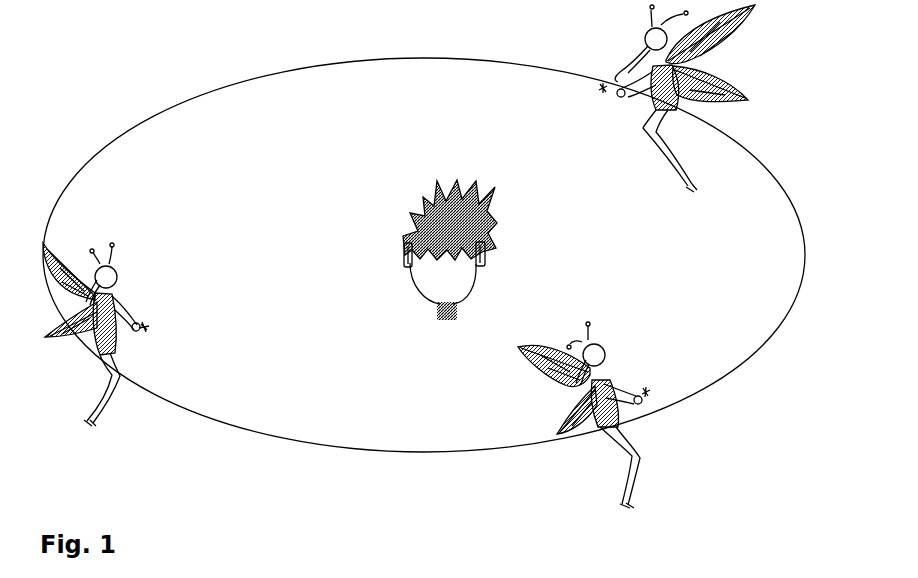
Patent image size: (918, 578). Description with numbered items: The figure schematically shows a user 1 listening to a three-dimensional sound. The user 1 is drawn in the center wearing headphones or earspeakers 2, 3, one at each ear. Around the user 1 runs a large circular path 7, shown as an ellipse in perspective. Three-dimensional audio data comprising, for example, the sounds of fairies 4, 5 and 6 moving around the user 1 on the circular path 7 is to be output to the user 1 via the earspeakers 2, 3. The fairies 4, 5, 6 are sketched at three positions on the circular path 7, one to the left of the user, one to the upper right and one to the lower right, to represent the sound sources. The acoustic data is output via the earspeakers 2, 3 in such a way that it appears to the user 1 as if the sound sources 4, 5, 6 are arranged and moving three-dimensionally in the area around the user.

The user 1 is at (436, 293).
The earspeaker 2 is at (404, 262).
The earspeaker 3 is at (486, 257).
The fairy 4 is at (137, 293).
The fairy 5 is at (610, 367).
The fairy 6 is at (612, 97).
The circular path 7 is at (196, 98).